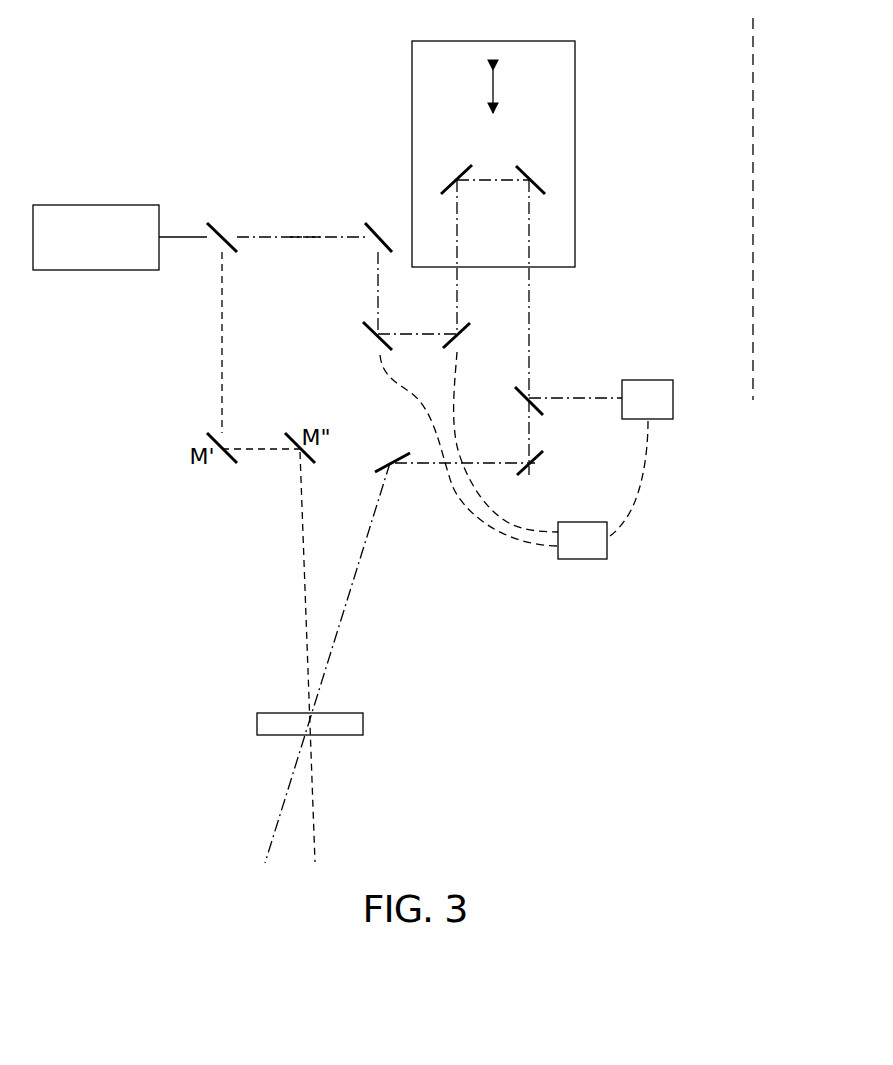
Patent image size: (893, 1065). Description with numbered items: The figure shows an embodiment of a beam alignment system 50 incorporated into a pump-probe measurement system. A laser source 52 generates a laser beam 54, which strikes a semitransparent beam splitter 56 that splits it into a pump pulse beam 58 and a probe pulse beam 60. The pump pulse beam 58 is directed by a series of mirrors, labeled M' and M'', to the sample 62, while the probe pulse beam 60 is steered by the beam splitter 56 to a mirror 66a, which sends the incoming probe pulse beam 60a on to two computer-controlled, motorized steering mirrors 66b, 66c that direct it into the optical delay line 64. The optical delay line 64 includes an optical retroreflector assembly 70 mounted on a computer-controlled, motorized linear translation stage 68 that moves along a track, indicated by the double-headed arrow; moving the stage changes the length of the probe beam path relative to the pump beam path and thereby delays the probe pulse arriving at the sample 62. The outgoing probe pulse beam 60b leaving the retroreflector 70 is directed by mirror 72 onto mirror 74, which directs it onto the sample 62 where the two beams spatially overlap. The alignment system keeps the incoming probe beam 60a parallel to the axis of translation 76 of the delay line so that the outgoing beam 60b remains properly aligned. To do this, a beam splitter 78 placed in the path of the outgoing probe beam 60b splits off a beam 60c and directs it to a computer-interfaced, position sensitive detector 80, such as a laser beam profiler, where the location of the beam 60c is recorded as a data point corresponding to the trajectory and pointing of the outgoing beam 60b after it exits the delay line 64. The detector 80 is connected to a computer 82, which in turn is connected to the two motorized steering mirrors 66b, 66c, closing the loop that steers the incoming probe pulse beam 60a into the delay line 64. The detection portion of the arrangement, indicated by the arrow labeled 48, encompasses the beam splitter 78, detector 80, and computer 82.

The detection system 48 is at (644, 569).
The beam alignment system 50 is at (119, 115).
The laser source 52 is at (97, 205).
The laser beam 54 is at (190, 236).
The semitransparent beam splitter 56 is at (220, 224).
The pump pulse beam 58 is at (307, 655).
The probe pulse beam 60 is at (276, 239).
The incoming probe pulse beam 60a is at (301, 236).
The outgoing probe pulse beam 60b is at (532, 323).
The split beam 60c is at (578, 398).
The sample 62 is at (257, 721).
The optical delay line 64 is at (598, 243).
The mirror 66a is at (370, 225).
The motorized steering mirror 66b is at (362, 328).
The motorized steering mirror 66c is at (468, 330).
The motorized linear translation stage 68 is at (576, 152).
The optical retroreflector assembly 70 is at (464, 170).
The mirror 72 is at (524, 472).
The mirror 74 is at (383, 466).
The axis of translation 76 is at (752, 207).
The beam splitter 78 is at (520, 396).
The position sensitive detector 80 is at (673, 400).
The computer 82 is at (585, 522).